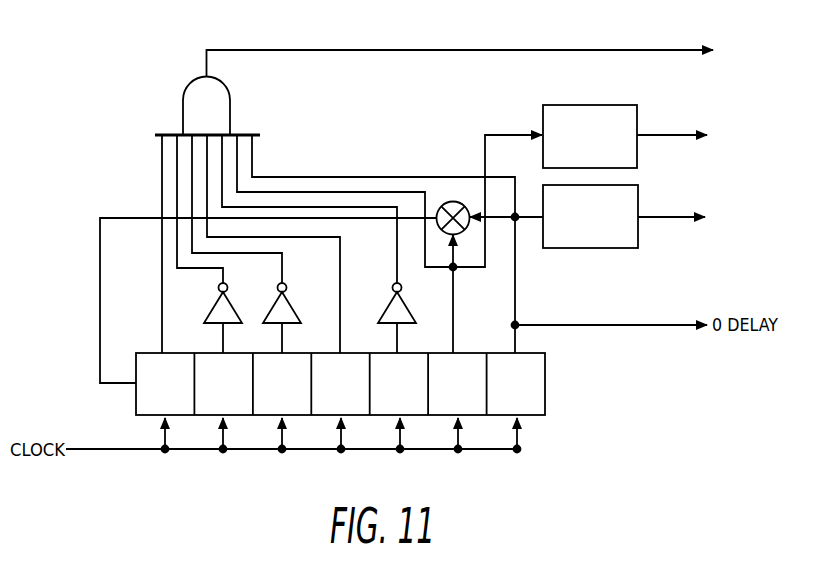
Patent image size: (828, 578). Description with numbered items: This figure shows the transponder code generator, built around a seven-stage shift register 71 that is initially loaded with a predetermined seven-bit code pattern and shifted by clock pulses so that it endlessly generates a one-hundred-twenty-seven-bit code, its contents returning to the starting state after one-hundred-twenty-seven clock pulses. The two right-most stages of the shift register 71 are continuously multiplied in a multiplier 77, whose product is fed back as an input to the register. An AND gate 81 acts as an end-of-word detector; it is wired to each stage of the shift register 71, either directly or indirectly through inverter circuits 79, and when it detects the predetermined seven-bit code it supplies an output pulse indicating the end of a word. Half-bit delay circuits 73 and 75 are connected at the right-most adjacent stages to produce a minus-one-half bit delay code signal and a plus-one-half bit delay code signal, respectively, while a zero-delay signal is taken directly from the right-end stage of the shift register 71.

The shift register 71 is at (423, 384).
The half-bit delay circuit 73 is at (635, 110).
The half-bit delay circuit 75 is at (637, 192).
The multiplier 77 is at (453, 200).
The inverter circuits 79 is at (226, 297).
The AND gate 81 is at (215, 109).